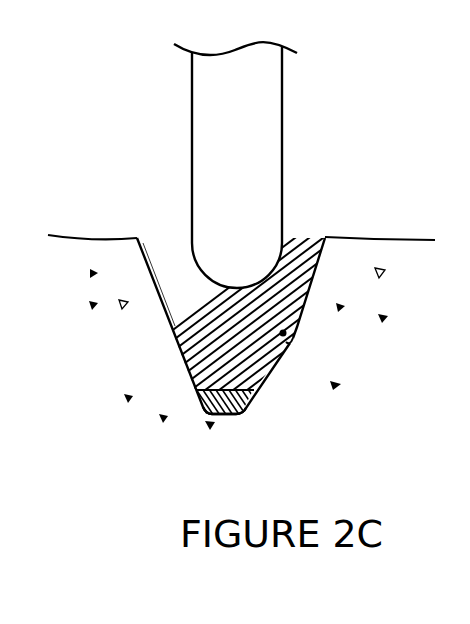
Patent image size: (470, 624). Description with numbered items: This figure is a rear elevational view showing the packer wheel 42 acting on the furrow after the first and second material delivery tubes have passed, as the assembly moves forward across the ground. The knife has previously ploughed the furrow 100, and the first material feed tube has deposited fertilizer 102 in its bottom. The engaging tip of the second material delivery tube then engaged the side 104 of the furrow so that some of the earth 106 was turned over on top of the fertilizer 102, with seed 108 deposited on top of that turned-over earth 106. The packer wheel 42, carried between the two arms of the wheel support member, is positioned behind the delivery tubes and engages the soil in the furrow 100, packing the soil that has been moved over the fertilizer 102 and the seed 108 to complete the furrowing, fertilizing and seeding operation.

The packer wheel 42 is at (250, 123).
The furrow 100 is at (245, 417).
The fertilizer 102 is at (203, 407).
The side of the furrow 104 is at (287, 342).
The earth 106 is at (173, 336).
The seed 108 is at (297, 322).